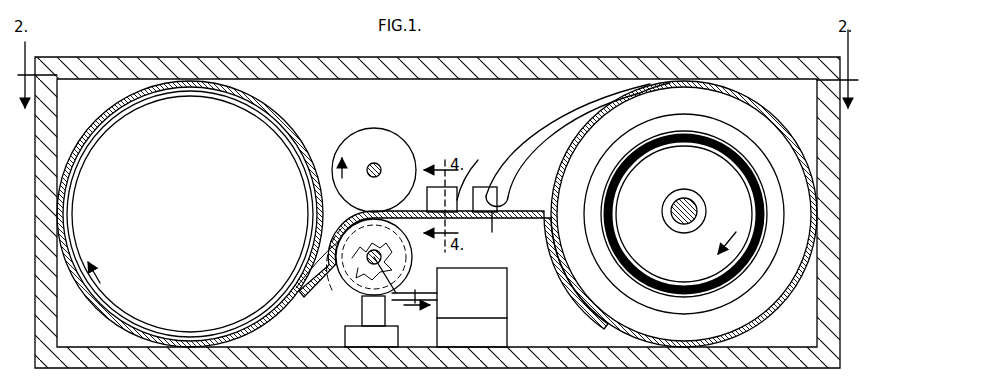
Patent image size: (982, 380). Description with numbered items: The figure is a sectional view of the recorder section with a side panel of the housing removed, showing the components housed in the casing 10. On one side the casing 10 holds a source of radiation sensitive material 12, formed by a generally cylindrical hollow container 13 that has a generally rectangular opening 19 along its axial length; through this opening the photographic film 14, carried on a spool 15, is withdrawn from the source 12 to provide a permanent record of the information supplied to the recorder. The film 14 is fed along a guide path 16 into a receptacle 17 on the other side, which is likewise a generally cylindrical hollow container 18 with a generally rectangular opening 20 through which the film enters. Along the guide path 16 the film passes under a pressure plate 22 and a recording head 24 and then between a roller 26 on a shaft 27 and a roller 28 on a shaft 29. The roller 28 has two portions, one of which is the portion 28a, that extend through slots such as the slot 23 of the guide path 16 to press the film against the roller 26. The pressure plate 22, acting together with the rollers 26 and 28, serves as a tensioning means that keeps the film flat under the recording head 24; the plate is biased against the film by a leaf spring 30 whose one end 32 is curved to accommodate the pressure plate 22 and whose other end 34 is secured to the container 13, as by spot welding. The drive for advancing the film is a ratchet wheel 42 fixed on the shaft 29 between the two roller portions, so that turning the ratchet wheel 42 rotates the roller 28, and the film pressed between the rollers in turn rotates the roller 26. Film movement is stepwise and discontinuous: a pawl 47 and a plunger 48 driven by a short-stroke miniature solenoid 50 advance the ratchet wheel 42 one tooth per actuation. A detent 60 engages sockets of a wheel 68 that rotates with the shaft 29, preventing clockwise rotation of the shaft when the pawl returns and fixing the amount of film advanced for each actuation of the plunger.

The casing 10 is at (256, 56).
The source of radiation sensitive material 12 is at (782, 296).
The cylindrical hollow container 13 is at (770, 134).
The photographic film 14 is at (110, 302).
The spool 15 is at (686, 198).
The guide path 16 is at (492, 222).
The receptacle 17 is at (96, 128).
The cylindrical hollow container 18 is at (270, 138).
The rectangular opening 19 is at (568, 232).
The rectangular opening 20 is at (328, 186).
The pressure plate 22 is at (488, 196).
The slot 23 is at (430, 196).
The recording head 24 is at (474, 171).
The roller 26 is at (396, 145).
The shaft 27 is at (373, 163).
The roller 28 is at (442, 256).
The roller portion 28a is at (326, 256).
The shaft 29 is at (382, 262).
The leaf spring 30 is at (545, 135).
The curved end of leaf spring 32 is at (514, 204).
The secured end of leaf spring 34 is at (630, 90).
The ratchet wheel 42 is at (380, 212).
The pawl 47 is at (361, 283).
The plunger 48 is at (402, 300).
The solenoid 50 is at (485, 302).
The detent 60 is at (365, 316).
The detent wheel 68 is at (323, 266).